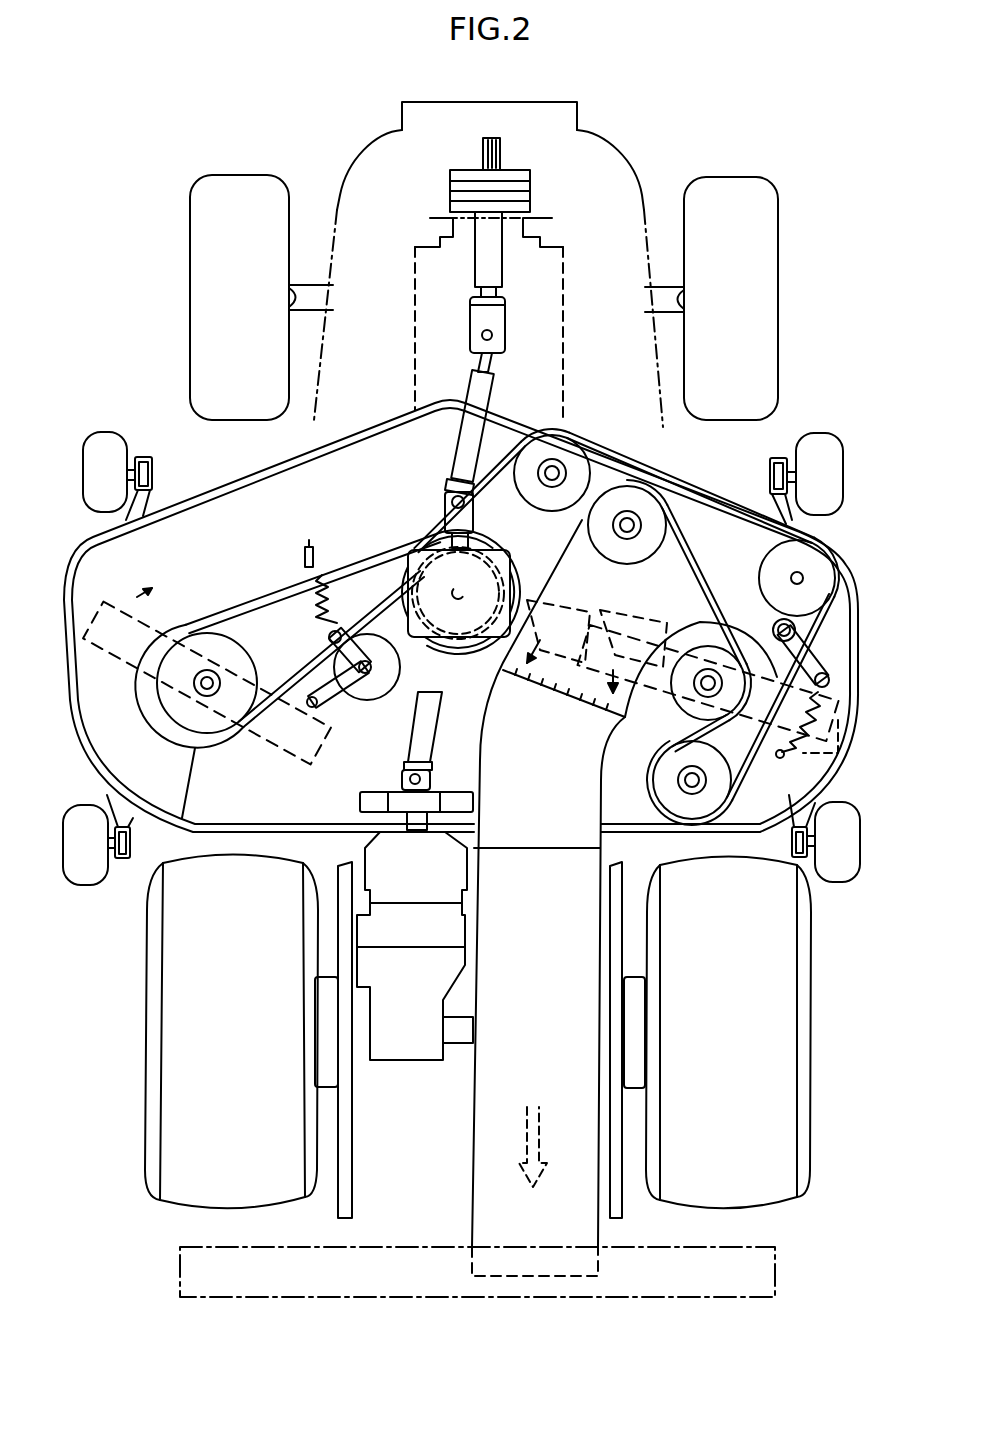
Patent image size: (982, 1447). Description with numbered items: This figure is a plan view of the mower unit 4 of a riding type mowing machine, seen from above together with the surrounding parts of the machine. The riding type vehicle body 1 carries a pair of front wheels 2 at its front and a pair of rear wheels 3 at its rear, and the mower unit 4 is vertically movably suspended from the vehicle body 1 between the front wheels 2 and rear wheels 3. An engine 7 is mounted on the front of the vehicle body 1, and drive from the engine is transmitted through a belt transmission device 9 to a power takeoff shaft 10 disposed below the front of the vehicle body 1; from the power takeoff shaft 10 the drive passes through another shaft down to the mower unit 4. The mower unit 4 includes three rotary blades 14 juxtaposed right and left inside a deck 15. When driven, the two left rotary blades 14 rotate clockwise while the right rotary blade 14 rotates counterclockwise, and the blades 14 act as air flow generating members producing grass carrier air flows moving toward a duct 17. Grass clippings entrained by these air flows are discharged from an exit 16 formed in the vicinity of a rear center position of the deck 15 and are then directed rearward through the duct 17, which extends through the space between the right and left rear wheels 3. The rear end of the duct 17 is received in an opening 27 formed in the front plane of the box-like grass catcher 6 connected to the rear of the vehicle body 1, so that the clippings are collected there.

The vehicle body 1 is at (350, 187).
The front wheels 2 is at (203, 266).
The rear wheels 3 is at (178, 1068).
The mower unit 4 is at (461, 838).
The grass catcher 6 is at (180, 1272).
The engine 7 is at (568, 262).
The belt transmission device 9 is at (541, 188).
The power takeoff shaft 10 is at (482, 288).
The rotary blades 14 is at (337, 535).
The deck 15 is at (253, 490).
The exit 16 is at (563, 853).
The duct 17 is at (490, 1120).
The opening 27 is at (518, 1243).